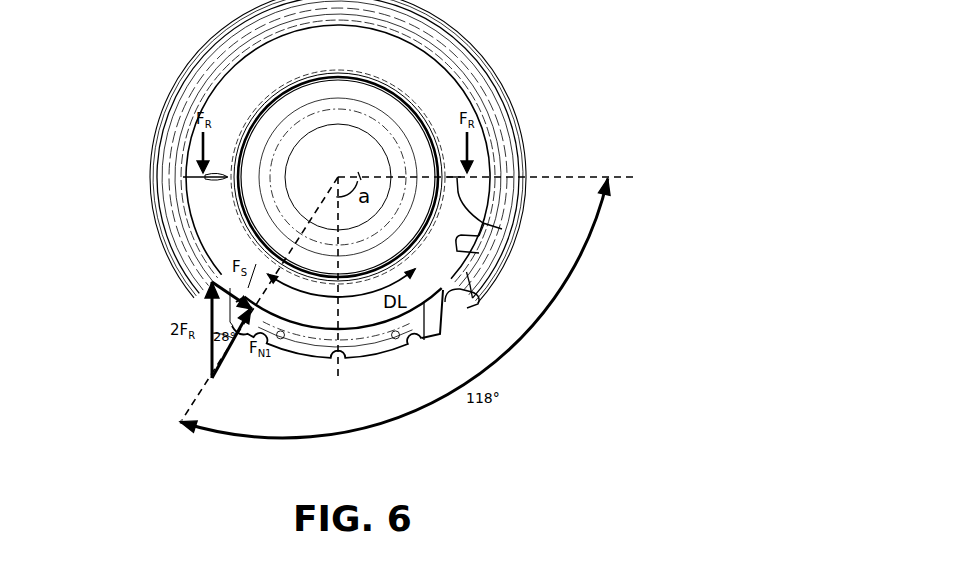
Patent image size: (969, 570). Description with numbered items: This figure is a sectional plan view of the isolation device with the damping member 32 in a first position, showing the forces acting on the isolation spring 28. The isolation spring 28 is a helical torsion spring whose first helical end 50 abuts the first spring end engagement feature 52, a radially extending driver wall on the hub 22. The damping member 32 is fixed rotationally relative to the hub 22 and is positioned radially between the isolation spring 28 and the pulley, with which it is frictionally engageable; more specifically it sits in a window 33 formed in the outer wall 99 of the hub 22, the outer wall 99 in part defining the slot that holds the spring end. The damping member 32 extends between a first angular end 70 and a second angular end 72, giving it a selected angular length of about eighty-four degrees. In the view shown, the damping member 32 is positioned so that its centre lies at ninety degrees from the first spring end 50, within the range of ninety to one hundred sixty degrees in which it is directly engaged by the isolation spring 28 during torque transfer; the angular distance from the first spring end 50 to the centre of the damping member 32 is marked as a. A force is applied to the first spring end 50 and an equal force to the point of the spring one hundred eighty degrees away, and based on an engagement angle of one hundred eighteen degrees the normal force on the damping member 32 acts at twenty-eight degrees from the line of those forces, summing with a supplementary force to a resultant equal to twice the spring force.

The hub 22 is at (385, 103).
The isolation spring 28 is at (457, 265).
The damping member 32 is at (373, 343).
The window 33 is at (421, 303).
The first helical end 50 is at (480, 186).
The first spring end engagement feature 52 is at (502, 229).
The first angular end 70 is at (477, 293).
The second angular end 72 is at (225, 306).
The outer wall 99 is at (490, 231).